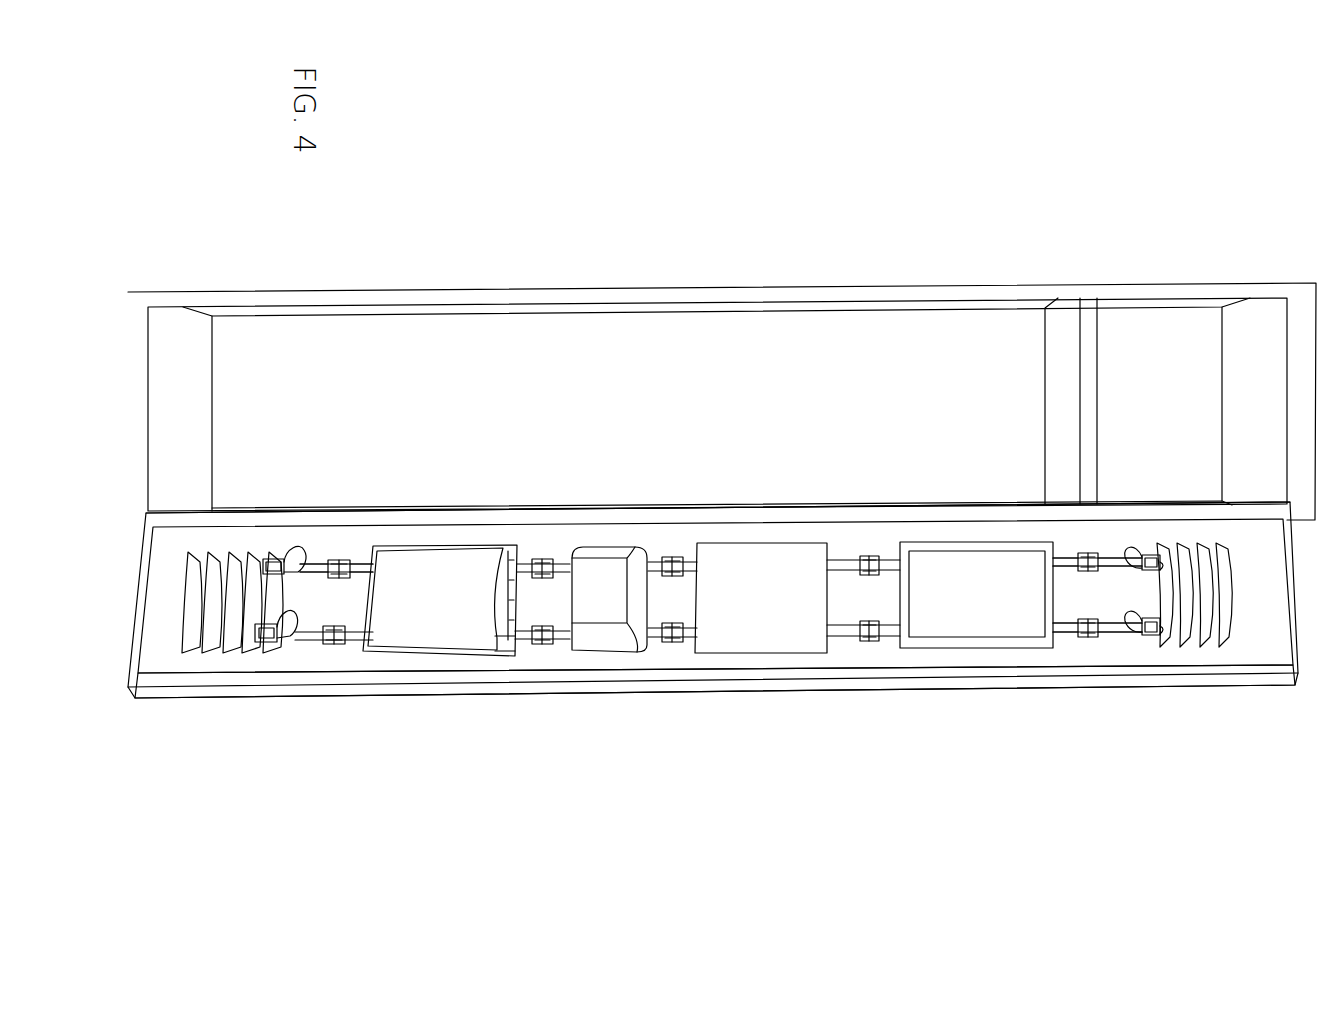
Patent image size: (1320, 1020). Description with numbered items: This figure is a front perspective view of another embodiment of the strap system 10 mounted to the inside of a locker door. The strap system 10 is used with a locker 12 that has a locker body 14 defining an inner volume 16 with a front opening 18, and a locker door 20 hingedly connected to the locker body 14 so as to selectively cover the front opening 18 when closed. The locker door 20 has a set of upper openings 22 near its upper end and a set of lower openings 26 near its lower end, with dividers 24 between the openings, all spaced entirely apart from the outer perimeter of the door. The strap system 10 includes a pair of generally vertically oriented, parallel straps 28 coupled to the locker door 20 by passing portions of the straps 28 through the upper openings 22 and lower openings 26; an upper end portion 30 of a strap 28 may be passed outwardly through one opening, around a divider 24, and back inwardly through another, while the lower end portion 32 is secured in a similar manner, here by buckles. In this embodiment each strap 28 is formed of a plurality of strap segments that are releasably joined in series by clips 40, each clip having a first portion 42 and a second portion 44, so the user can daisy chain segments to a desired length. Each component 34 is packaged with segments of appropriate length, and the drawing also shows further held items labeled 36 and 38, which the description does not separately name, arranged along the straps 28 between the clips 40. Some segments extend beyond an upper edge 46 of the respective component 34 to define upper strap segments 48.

The strap system 10 is at (847, 655).
The locker 12 is at (697, 303).
The locker body 14 is at (553, 695).
The inner volume 16 is at (840, 370).
The front opening 18 is at (763, 367).
The locker door 20 is at (915, 676).
The upper openings 22 is at (885, 643).
The dividers 24 is at (303, 697).
The lower openings 26 is at (257, 600).
The straps 28 is at (658, 552).
The upper end portion 30 is at (1125, 547).
The lower end portion 32 is at (297, 545).
The component 34 is at (462, 697).
The dome unit 36 is at (623, 700).
The display unit 38 is at (938, 645).
The clips 40 is at (868, 558).
The first portion 42 is at (308, 563).
The second portion 44 is at (357, 563).
The upper edge 46 is at (987, 643).
The upper strap segments 48 is at (1065, 553).